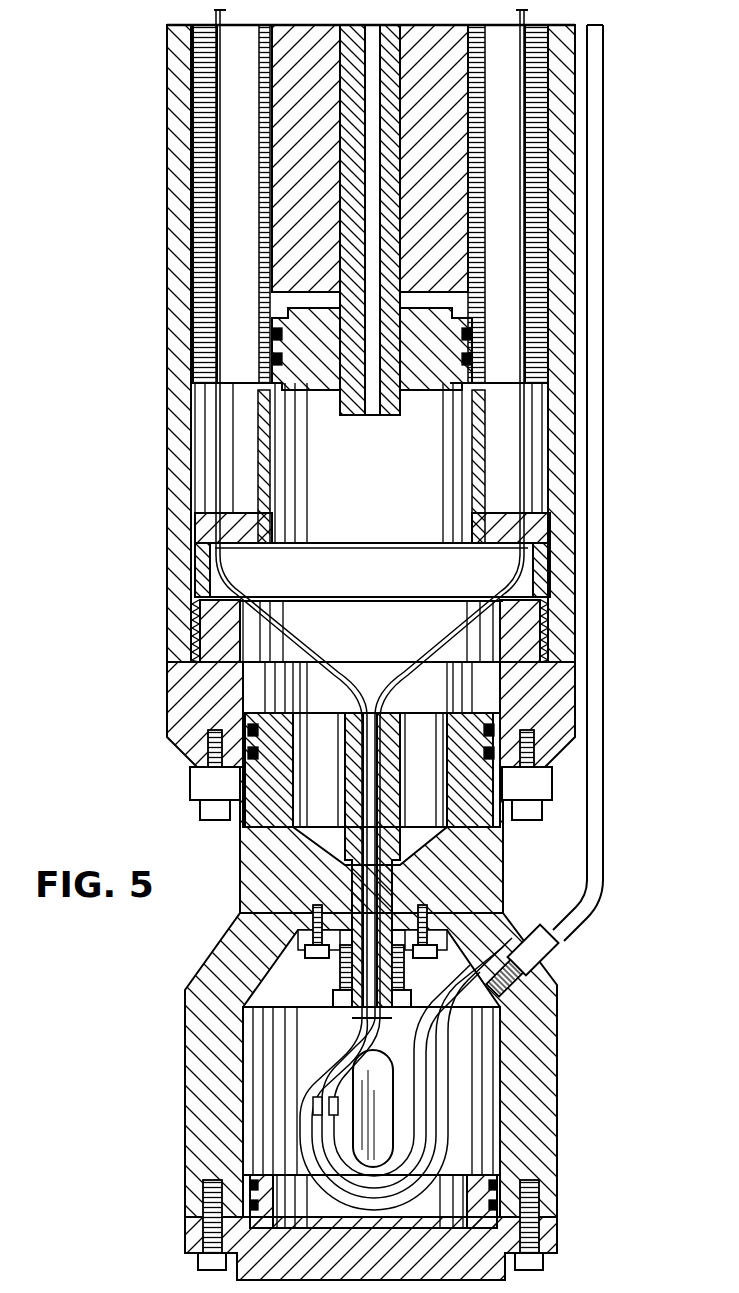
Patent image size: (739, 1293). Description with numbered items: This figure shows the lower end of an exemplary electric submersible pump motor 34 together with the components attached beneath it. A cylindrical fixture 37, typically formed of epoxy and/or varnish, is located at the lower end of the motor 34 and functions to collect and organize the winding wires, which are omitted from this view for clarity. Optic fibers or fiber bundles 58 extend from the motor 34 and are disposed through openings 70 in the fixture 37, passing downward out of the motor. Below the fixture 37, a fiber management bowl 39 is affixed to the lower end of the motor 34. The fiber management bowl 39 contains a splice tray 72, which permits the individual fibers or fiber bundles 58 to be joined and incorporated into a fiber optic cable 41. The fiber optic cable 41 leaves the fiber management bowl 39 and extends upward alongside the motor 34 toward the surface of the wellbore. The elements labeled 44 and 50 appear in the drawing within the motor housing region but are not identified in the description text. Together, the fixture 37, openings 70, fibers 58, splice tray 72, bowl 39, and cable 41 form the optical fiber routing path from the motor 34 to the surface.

The motor 34 is at (156, 322).
The cylindrical fixture 37 is at (270, 497).
The fiber management bowl 39 is at (178, 1102).
The fiber optic cable 41 is at (596, 629).
The threaded sleeve 44 is at (194, 181).
The cables 50 is at (232, 133).
The optic fibers/fiber bundles 58 is at (215, 432).
The openings 70 is at (215, 530).
The splice tray 72 is at (300, 1055).